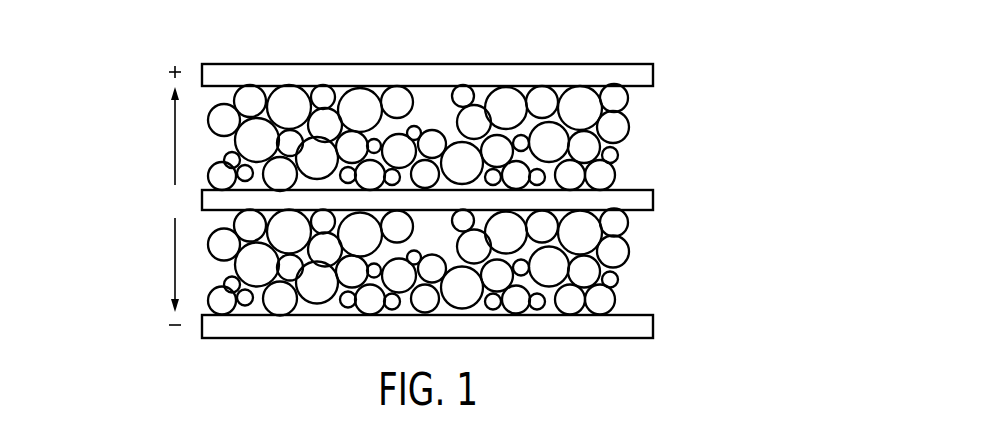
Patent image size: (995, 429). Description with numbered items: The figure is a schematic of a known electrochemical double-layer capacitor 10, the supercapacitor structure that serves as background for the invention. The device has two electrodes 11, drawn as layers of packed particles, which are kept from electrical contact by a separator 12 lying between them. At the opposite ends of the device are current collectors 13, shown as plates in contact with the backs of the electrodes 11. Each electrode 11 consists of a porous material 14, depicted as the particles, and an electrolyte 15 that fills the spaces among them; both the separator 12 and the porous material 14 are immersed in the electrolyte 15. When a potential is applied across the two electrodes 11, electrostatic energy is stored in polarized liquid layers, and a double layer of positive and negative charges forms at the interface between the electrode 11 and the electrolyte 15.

The electrochemical double-layer capacitor 10 is at (60, 60).
The electrode 11 is at (660, 132).
The separator 12 is at (640, 189).
The current collector 13 is at (263, 63).
The porous material 14 is at (283, 100).
The electrolyte 15 is at (395, 128).